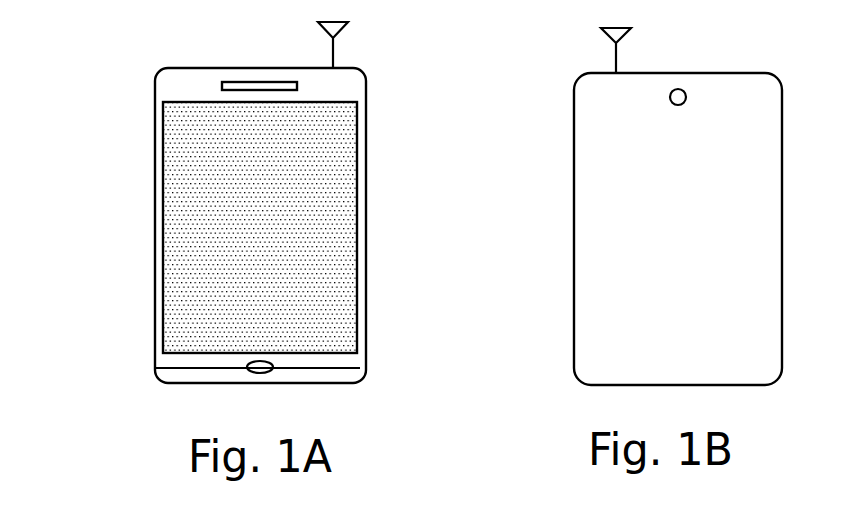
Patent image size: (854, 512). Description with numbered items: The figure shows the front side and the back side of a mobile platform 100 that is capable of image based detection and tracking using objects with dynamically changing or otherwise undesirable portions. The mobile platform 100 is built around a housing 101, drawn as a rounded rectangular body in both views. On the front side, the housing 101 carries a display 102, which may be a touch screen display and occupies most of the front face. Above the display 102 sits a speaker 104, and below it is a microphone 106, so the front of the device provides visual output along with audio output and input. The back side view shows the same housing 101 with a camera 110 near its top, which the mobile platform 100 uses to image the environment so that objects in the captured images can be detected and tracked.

In FIG. 1A, the mobile platform 100 is at (145, 37).
In FIG. 1B, the mobile platform 100 is at (513, 58).
In FIG. 1A, the housing 101 is at (156, 255).
In FIG. 1B, the housing 101 is at (574, 128).
In FIG. 1A, the display 102 is at (358, 233).
In FIG. 1A, the speaker 104 is at (222, 86).
In FIG. 1A, the microphone 106 is at (158, 368).
In FIG. 1B, the camera 110 is at (685, 88).